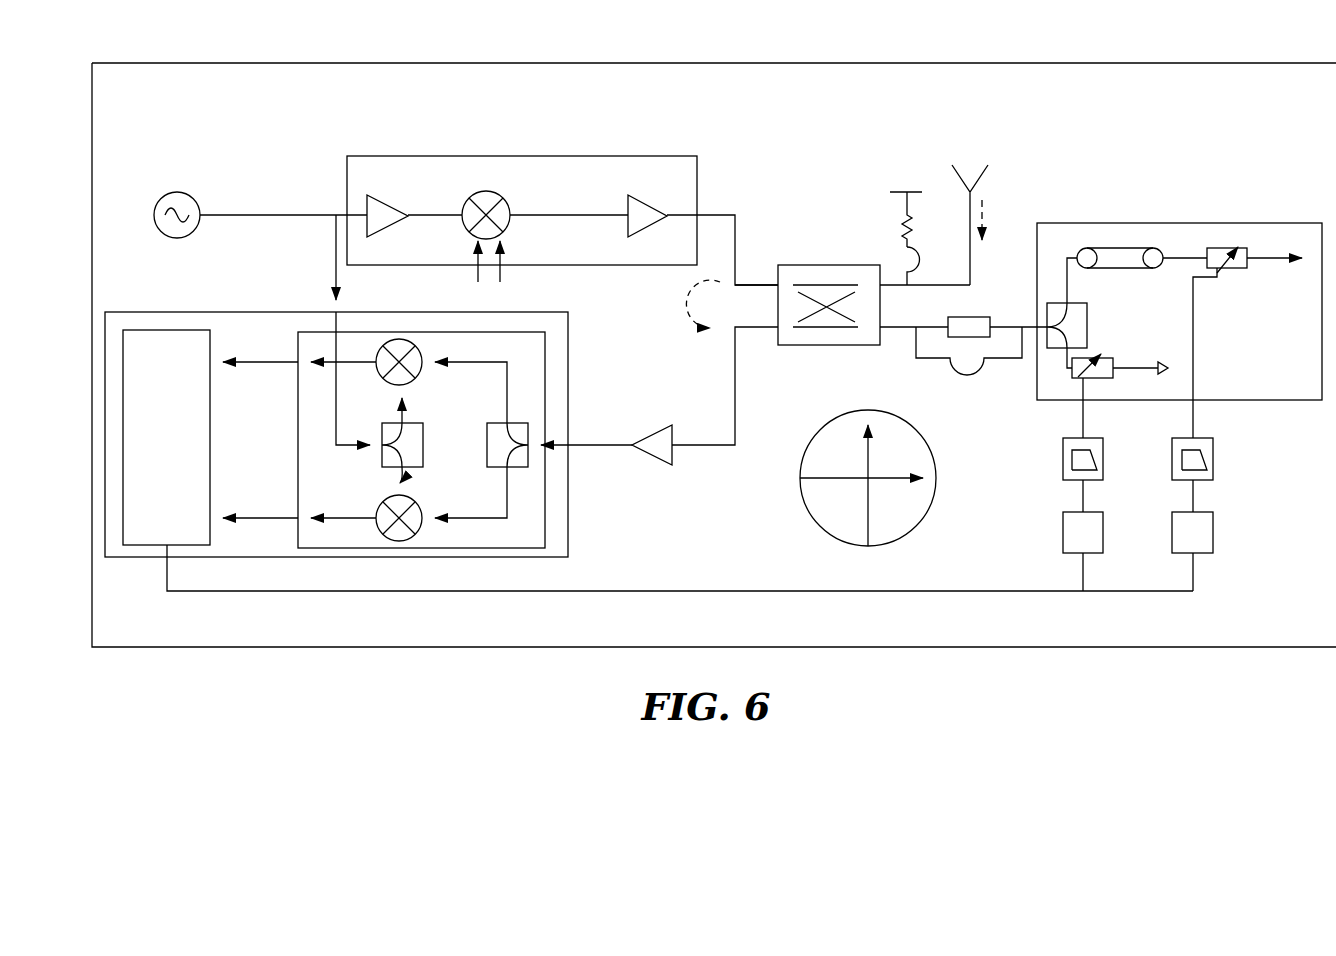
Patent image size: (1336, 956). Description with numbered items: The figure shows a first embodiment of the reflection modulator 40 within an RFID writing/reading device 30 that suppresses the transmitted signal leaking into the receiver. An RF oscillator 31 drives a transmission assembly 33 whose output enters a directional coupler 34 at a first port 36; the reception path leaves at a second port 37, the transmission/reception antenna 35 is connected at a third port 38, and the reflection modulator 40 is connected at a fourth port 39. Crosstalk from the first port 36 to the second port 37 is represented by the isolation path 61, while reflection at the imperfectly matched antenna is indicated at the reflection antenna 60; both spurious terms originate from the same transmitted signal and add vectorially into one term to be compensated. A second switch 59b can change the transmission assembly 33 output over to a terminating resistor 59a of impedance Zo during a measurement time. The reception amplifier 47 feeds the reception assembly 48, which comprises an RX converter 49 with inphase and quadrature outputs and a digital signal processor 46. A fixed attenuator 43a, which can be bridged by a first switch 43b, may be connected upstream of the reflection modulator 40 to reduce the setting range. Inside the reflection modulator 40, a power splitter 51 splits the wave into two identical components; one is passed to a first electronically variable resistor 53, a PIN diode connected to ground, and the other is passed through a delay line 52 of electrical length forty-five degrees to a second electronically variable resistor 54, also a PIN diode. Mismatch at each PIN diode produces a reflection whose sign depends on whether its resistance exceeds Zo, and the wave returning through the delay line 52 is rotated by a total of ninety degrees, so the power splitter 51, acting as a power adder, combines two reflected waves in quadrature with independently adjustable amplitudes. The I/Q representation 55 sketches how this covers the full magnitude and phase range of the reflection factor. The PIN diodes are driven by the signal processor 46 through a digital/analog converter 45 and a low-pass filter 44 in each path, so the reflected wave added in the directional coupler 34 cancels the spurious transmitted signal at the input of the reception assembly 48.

The RFID writing/reading device 30 is at (1167, 113).
The RF oscillator 31 is at (260, 207).
The transmission assembly 33 is at (615, 155).
The directional coupler 34 is at (825, 347).
The transmission/reception antenna 35 is at (970, 216).
The first port 36 is at (756, 273).
The second port 37 is at (725, 386).
The third port 38 is at (925, 277).
The fourth port 39 is at (914, 338).
The reflection modulator 40 is at (1148, 223).
The fixed attenuator 43a is at (997, 315).
The first switch 43b is at (969, 364).
The low-pass filter 44 is at (1063, 456).
The digital/analog converter 45 is at (1063, 532).
The digital signal processor 46 is at (152, 373).
The reception amplifier 47 is at (606, 438).
The reception assembly 48 is at (570, 498).
The RX converter with I/Q outputs 49 is at (326, 493).
The power splitter, power adder 51 is at (1057, 301).
The delay line 52 is at (1113, 247).
The first electronically variable resistor 53 is at (1108, 357).
The second electronically variable resistor 54 is at (1230, 270).
The I/Q representation of the reflected signal 55 is at (792, 489).
The terminating resistor 59a is at (921, 219).
The second switch 59b is at (931, 266).
The reflection antenna 60 is at (998, 220).
The isolation between transmitter and receiver 61 is at (710, 304).